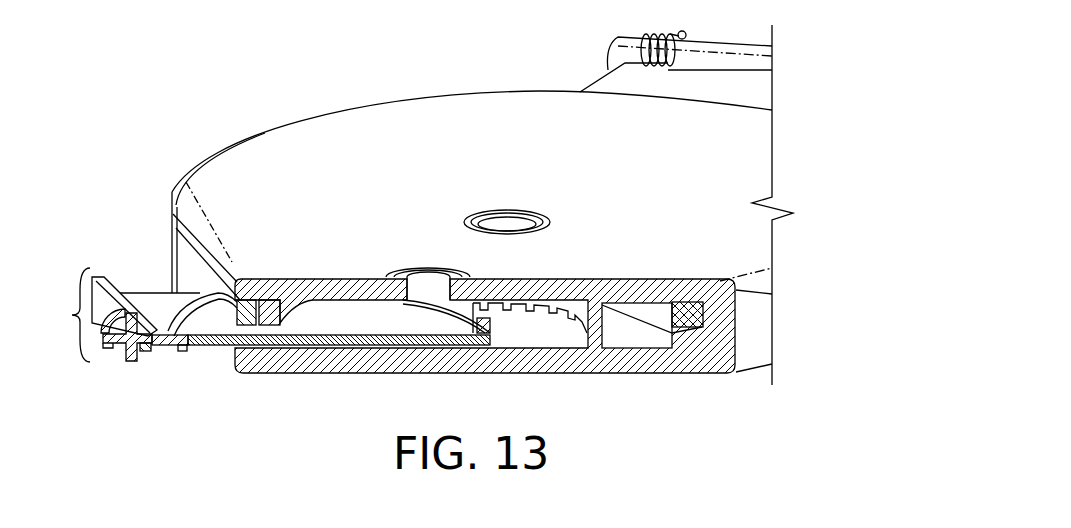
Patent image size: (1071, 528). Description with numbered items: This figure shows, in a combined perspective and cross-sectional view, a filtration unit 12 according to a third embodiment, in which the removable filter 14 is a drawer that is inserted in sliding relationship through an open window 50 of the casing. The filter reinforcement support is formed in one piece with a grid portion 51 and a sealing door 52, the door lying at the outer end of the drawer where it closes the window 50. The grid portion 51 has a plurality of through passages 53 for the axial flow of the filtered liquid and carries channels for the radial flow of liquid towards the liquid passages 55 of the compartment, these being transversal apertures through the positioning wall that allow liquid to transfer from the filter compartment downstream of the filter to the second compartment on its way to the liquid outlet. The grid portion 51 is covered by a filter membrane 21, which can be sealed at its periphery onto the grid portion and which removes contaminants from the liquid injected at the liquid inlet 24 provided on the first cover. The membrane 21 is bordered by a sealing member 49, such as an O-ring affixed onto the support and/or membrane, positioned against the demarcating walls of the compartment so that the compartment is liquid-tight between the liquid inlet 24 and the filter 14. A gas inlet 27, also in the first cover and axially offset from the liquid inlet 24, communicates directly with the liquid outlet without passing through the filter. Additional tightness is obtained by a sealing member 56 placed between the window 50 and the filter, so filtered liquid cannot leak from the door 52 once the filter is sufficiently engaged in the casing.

The filtration unit 12 is at (192, 131).
The filter membrane 21 is at (357, 317).
The liquid inlet 24 is at (430, 290).
The gas inlet 27 is at (498, 214).
The removable filter 14 is at (120, 323).
The sealing member 49 is at (165, 307).
The open window 50 is at (175, 291).
The grid portion 51 is at (285, 346).
The sealing door 52 is at (122, 349).
The through passages 53 is at (404, 336).
The liquid passages 55 is at (503, 307).
The sealing member 56 is at (147, 350).